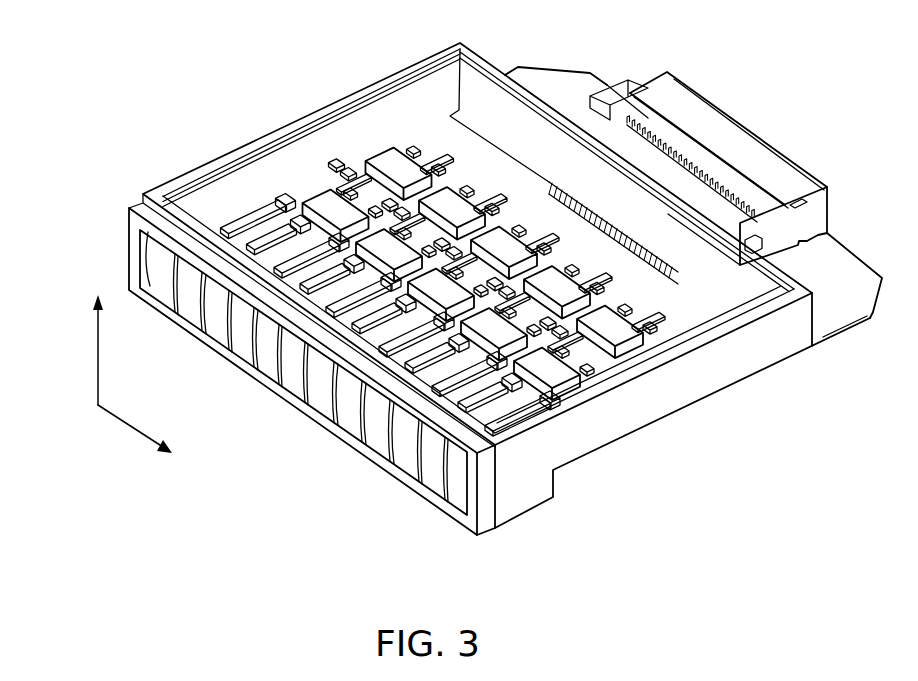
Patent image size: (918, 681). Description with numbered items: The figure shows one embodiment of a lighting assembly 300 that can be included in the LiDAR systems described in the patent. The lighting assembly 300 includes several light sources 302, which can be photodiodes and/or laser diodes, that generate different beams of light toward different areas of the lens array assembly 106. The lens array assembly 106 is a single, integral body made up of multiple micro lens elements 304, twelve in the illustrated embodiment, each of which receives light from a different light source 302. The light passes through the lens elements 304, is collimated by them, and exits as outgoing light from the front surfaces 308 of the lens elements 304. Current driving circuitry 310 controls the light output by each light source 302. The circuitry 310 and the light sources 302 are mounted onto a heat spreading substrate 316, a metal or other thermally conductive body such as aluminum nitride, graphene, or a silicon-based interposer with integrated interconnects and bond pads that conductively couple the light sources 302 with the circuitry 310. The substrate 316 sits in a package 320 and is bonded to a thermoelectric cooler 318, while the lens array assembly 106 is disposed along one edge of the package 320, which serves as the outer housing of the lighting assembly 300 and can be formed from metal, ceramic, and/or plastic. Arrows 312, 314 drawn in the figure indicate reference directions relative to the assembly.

The lighting assembly 300 is at (201, 48).
The light source 302 is at (283, 183).
The lens element 304 is at (157, 259).
The front surface 308 is at (149, 232).
The current driving circuitry 310 is at (330, 200).
The first direction 312 is at (97, 360).
The second direction 314 is at (124, 430).
The heat spreading substrate 316 is at (433, 147).
The thermoelectric cooler 318 is at (550, 87).
The package 320 is at (673, 388).
The lens array assembly 106 is at (450, 529).